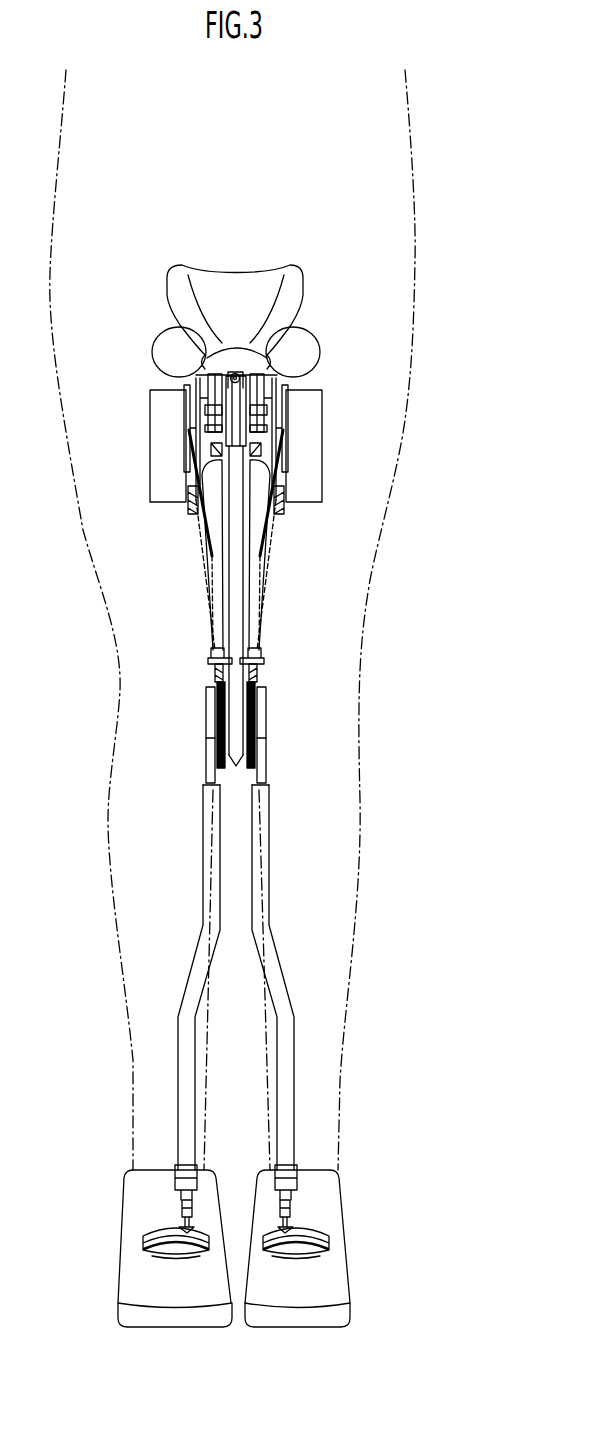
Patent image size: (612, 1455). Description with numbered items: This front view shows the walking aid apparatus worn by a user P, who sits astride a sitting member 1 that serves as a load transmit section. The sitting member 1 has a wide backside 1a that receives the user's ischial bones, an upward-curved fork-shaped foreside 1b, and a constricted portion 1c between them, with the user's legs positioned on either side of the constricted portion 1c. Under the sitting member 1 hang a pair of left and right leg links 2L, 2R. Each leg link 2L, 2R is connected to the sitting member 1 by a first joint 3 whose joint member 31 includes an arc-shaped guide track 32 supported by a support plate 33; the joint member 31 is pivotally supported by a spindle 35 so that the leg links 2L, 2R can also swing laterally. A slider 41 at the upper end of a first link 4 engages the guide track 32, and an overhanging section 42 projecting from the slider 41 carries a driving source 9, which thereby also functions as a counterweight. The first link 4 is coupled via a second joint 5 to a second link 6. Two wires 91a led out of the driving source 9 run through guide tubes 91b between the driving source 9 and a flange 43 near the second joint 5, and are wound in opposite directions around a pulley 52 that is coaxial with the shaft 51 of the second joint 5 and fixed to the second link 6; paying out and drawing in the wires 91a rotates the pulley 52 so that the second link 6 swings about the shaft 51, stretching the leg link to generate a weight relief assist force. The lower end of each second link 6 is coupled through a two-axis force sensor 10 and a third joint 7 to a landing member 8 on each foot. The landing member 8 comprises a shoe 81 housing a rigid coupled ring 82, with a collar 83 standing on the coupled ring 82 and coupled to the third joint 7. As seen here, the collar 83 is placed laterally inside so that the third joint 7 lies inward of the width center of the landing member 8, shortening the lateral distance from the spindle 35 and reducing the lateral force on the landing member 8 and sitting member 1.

The user P is at (415, 248).
The sitting member 1 is at (254, 289).
The backside 1a is at (303, 335).
The foreside 1b is at (303, 292).
The constricted portion 1c is at (270, 357).
The spindle 35 is at (235, 372).
The first joint 3 is at (208, 399).
The joint member 31 is at (236, 441).
The guide track 32 is at (205, 408).
The support plate 33 is at (205, 430).
The slider 41 is at (206, 448).
The driving source 9 is at (152, 478).
The overhanging section 42 is at (197, 518).
The guide tube 91b is at (212, 556).
The first link 4 is at (213, 582).
The flange 43 is at (211, 656).
The wire 91a is at (212, 673).
The second joint 5 is at (196, 711).
The right leg link 2R is at (158, 740).
The left leg link 2L is at (334, 746).
The shaft 51 is at (208, 738).
The pulley 52 is at (236, 768).
The second link 6 is at (198, 948).
The force sensor 10 is at (188, 1178).
The third joint 7 is at (175, 1205).
The landing member 8 is at (236, 1248).
The coupled ring 82 is at (148, 1238).
The collar 83 is at (191, 1243).
The shoe 81 is at (125, 1275).